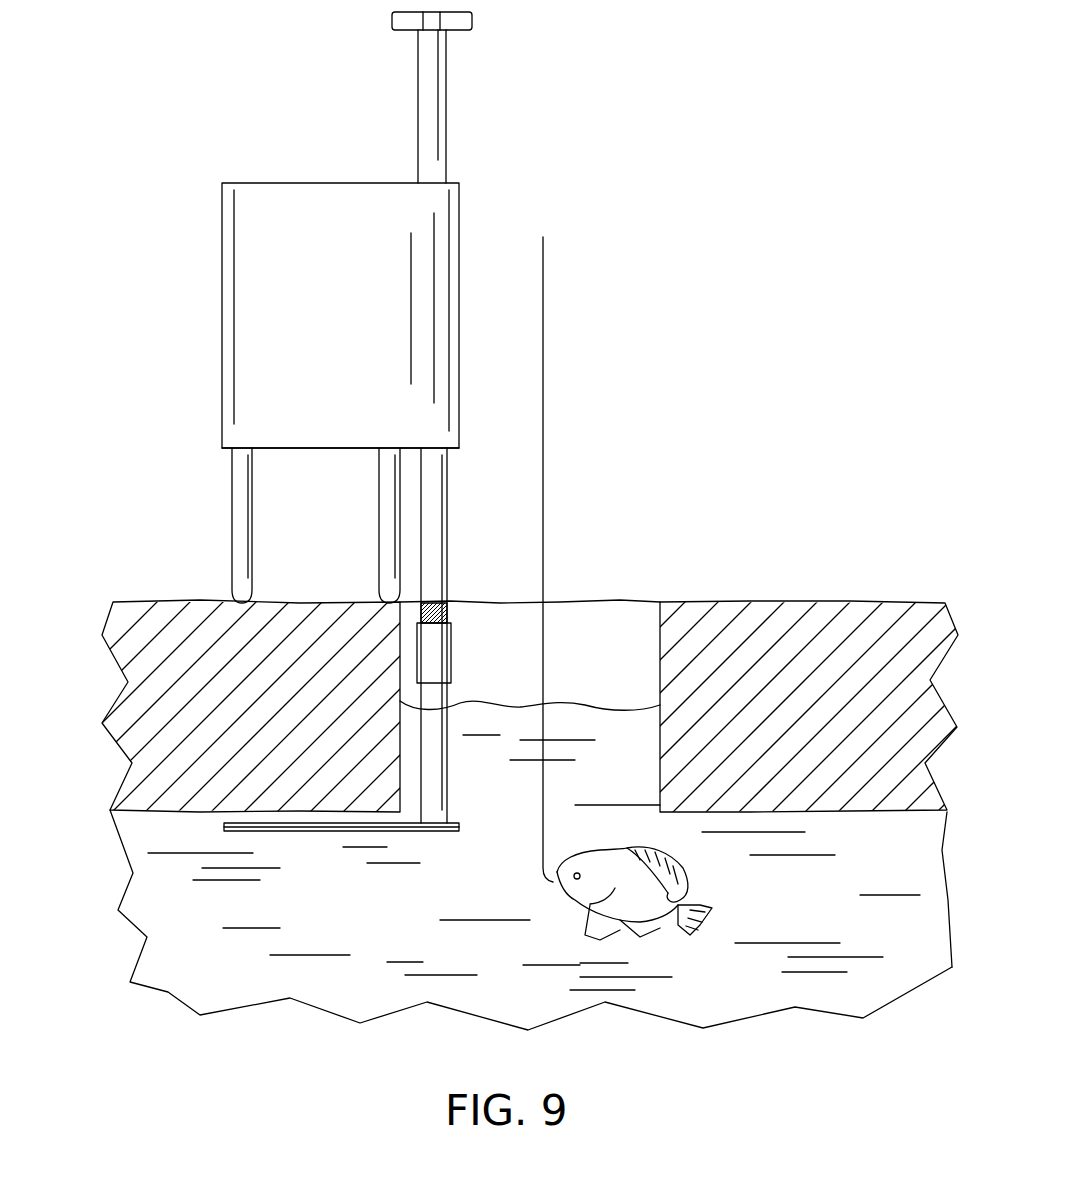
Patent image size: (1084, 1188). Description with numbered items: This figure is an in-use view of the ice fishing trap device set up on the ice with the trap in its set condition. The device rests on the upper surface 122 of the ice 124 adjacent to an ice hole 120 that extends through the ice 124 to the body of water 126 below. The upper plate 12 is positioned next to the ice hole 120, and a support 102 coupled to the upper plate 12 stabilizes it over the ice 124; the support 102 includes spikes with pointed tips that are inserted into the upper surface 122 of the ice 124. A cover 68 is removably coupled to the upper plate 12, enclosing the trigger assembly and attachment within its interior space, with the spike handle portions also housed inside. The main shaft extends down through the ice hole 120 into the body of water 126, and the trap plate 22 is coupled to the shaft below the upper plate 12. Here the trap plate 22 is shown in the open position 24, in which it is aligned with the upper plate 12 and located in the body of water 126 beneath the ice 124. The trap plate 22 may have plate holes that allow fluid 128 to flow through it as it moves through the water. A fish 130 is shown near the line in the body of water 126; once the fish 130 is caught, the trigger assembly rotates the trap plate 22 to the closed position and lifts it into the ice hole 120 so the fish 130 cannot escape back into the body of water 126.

The open position 24 is at (112, 236).
The cover 68 is at (249, 319).
The upper plate 12 is at (222, 447).
The support 102 is at (385, 540).
The trap plate 22 is at (222, 826).
The ice hole 120 is at (627, 612).
The upper surface 122 is at (800, 600).
The ice 124 is at (900, 662).
The body of water 126 is at (888, 918).
The fluid 128 is at (213, 920).
The fish 130 is at (655, 910).